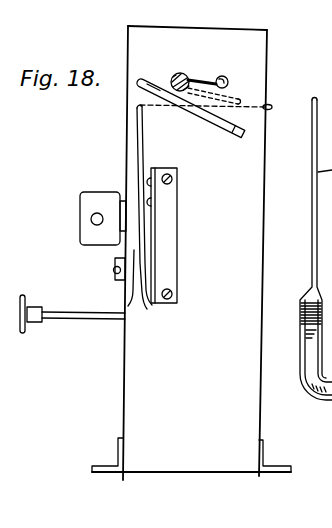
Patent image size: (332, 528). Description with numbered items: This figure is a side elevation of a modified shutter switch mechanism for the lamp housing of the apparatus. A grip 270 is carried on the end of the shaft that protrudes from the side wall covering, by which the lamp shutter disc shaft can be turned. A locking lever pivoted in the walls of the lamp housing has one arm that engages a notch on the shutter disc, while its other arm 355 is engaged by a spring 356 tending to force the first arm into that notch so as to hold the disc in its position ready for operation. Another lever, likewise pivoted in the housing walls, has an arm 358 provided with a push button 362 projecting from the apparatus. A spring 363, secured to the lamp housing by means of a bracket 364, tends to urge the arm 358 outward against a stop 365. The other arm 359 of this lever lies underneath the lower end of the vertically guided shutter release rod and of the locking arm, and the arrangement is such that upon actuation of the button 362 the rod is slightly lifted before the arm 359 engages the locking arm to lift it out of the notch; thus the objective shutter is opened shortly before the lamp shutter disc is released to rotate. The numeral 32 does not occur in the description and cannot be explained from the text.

The grip 270 is at (80, 200).
The arm of lever 355 is at (207, 121).
The spring 356 is at (208, 76).
The arm of lever 358 is at (165, 108).
The arm of lever 359 is at (248, 104).
The push button 362 is at (36, 305).
The spring 363 is at (145, 300).
The bracket 364 is at (170, 256).
The stop 365 is at (115, 270).
The U-tube 32 is at (323, 401).